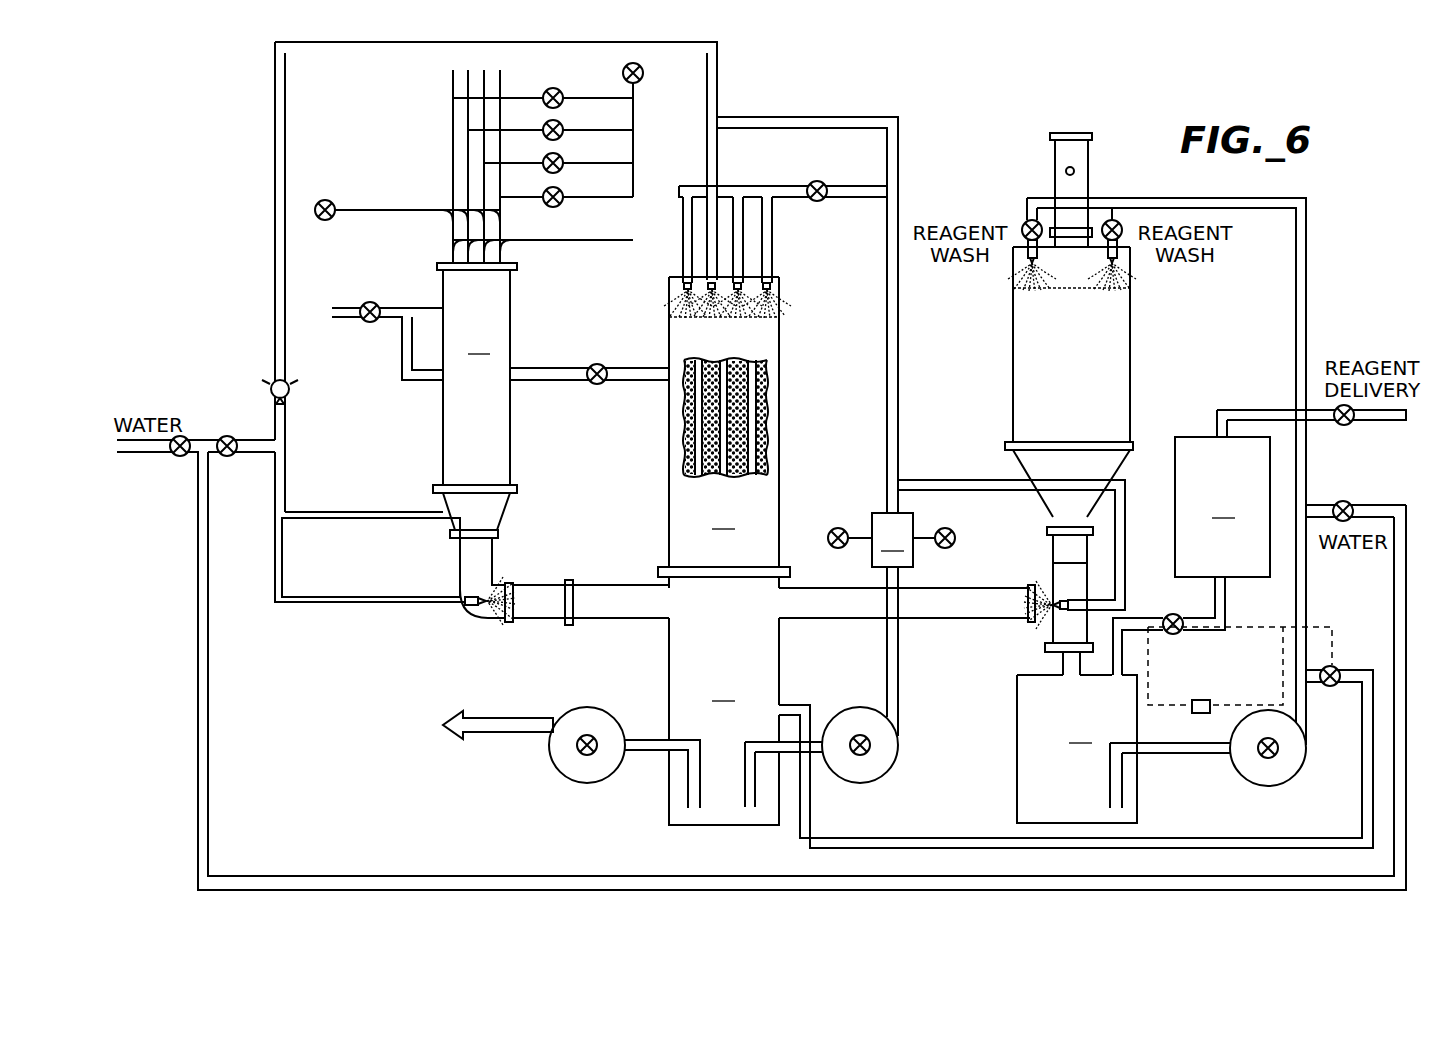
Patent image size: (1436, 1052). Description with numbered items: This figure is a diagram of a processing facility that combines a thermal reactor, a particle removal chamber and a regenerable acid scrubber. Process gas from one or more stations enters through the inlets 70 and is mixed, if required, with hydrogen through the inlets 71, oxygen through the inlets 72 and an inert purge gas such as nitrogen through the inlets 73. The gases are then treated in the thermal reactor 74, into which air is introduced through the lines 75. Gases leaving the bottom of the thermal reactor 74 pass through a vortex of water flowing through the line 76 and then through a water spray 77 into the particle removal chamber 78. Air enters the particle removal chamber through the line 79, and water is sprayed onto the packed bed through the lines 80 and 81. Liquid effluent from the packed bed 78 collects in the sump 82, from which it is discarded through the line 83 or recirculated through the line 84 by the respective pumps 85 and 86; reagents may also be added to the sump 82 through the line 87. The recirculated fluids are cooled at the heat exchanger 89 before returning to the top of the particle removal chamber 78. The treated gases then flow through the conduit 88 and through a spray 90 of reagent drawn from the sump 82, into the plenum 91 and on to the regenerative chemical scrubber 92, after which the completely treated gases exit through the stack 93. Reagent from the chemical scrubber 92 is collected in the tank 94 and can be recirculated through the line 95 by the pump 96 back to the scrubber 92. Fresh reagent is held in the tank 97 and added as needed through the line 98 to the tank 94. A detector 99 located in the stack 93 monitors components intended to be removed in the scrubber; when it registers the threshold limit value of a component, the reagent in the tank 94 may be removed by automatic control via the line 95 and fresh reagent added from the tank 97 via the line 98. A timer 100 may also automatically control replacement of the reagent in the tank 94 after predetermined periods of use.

The inlets 70 is at (453, 76).
The hydrogen inlets 71 is at (607, 130).
The oxygen inlets 72 is at (538, 242).
The inert purge gas inlets 73 is at (407, 207).
The thermal reactor 74 is at (475, 442).
The air lines 75 is at (423, 307).
The vortex water line 76 is at (395, 510).
The water spray 77 is at (487, 620).
The particle removal chamber 78 is at (724, 387).
The air line 79 is at (648, 368).
The water spray line 80 is at (793, 182).
The water spray line 81 is at (703, 140).
The sump 82 is at (724, 701).
The discard line 83 is at (657, 740).
The recirculation line 84 is at (792, 760).
The pump 85 is at (585, 783).
The pump 86 is at (860, 707).
The reagent line 87 is at (945, 838).
The conduit 88 is at (967, 619).
The heat exchanger 89 is at (915, 514).
The reagent spray 90 is at (1043, 623).
The plenum 91 is at (1027, 470).
The regenerative chemical scrubber 92 is at (1013, 350).
The stack 93 is at (1055, 160).
The reagent tank 94 is at (1077, 749).
The recirculation line 95 is at (1207, 742).
The pump 96 is at (1233, 767).
The fresh reagent tank 97 is at (1222, 533).
The reagent addition line 98 is at (1143, 620).
The detector 99 is at (1076, 170).
The timer 100 is at (1213, 703).